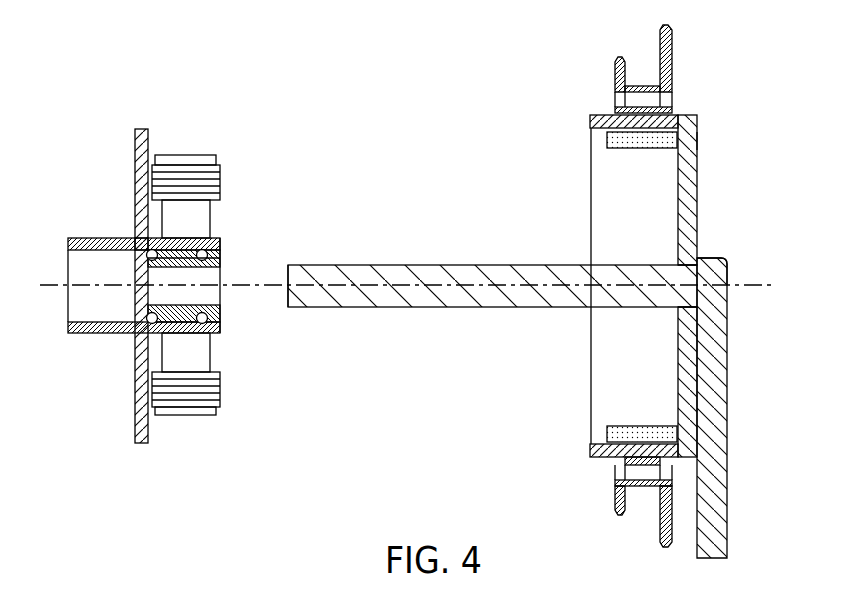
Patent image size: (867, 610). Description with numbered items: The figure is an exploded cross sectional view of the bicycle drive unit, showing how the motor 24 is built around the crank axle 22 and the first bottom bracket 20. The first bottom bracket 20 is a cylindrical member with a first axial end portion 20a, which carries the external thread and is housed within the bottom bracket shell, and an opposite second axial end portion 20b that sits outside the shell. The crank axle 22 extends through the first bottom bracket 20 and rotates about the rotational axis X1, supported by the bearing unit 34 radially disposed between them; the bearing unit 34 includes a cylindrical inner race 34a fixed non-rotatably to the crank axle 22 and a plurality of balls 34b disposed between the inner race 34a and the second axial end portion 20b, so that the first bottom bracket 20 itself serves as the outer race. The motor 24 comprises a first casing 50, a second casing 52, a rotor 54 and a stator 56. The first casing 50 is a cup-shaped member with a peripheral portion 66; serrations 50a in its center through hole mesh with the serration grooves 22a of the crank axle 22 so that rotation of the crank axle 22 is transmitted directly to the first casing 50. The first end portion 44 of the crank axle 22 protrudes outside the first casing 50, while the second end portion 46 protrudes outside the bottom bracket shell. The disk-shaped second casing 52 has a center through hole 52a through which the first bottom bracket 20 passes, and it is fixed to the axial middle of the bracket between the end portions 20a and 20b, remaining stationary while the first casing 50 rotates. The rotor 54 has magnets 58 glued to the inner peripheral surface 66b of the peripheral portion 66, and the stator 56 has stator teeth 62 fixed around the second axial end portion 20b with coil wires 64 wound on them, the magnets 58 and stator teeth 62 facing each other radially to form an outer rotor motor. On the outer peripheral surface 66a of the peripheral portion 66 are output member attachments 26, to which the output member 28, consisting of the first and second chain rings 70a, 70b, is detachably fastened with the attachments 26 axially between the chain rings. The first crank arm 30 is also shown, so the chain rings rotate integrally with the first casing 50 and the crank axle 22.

The first bottom bracket 20 is at (172, 297).
The first axial end portion 20a is at (72, 238).
The second axial end portion 20b is at (222, 243).
The crank axle 22 is at (492, 295).
The serration grooves 22a is at (690, 309).
The motor 24 is at (173, 228).
The output member attachments 26 is at (646, 78).
The output member 28 is at (643, 278).
The first crank arm 30 is at (747, 393).
The bearing unit 34 is at (184, 294).
The inner race 34a is at (197, 258).
The balls 34b is at (140, 258).
The first end portion 44 is at (718, 277).
The second end portion 46 is at (318, 275).
The first casing 50 is at (698, 286).
The serrations 50a is at (672, 278).
The second casing 52 is at (107, 286).
The center through hole 52a is at (113, 238).
The rotor 54 is at (636, 270).
The stator 56 is at (213, 282).
The magnets 58 is at (650, 150).
The stator teeth 62 is at (185, 221).
The coil wires 64 is at (177, 175).
The peripheral portion 66 is at (600, 120).
The outer peripheral surface 66a is at (688, 115).
The inner peripheral surface 66b is at (700, 149).
The first chain ring 70a is at (670, 37).
The second chain ring 70b is at (618, 72).
The rotational axis X1 is at (757, 292).